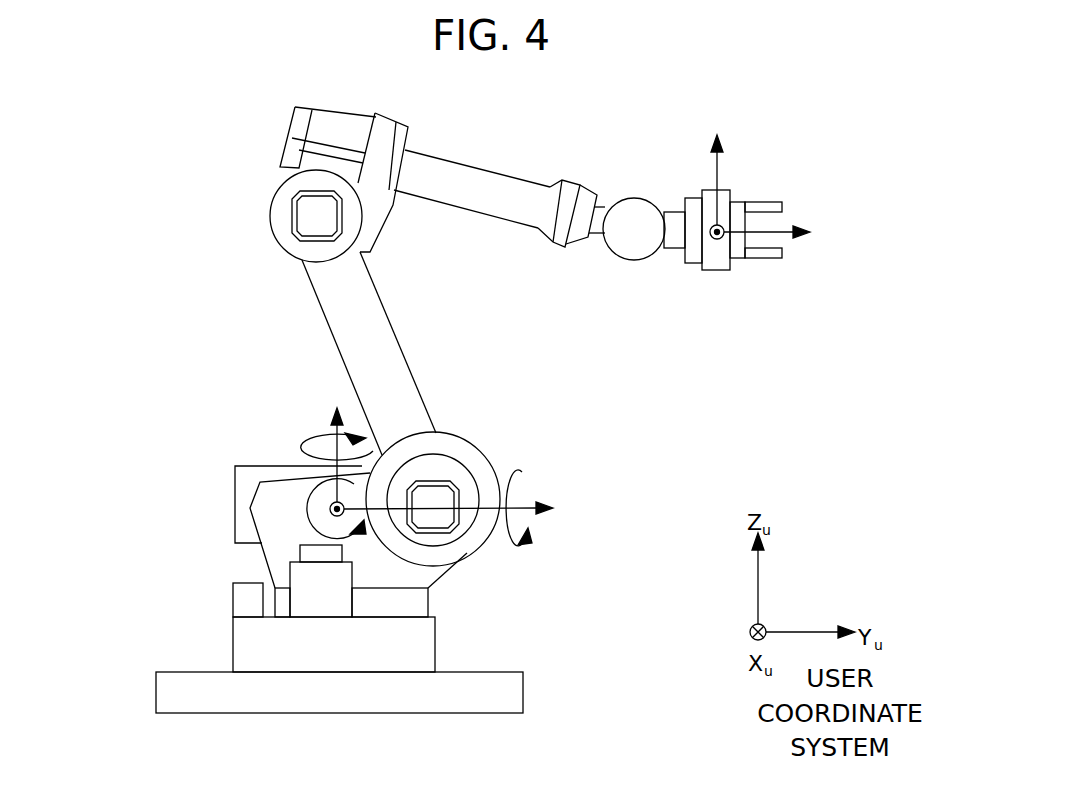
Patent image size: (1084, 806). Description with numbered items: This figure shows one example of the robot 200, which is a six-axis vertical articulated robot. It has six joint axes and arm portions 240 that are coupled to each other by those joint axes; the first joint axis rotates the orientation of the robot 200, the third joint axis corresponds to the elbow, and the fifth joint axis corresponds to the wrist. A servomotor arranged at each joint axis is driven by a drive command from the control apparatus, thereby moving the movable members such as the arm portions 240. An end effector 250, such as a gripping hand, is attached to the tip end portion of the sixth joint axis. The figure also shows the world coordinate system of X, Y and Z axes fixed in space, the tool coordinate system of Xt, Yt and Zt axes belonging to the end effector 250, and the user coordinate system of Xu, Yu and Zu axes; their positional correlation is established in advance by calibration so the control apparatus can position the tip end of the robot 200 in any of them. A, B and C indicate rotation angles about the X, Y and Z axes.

The robot 200 is at (222, 152).
The arm portion 240 is at (336, 348).
The end effector 250 is at (760, 200).